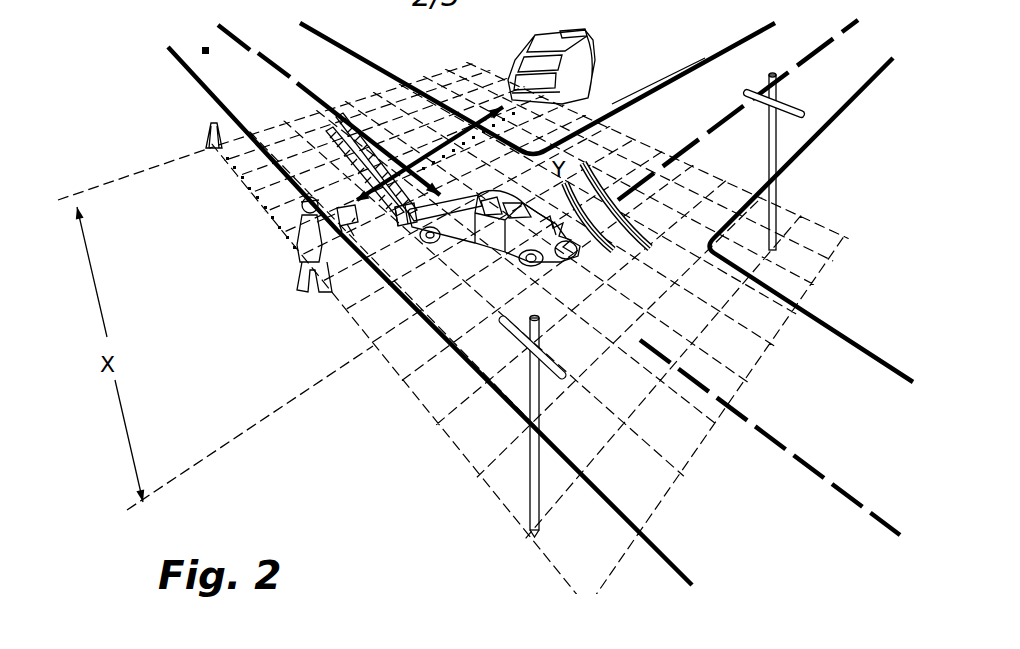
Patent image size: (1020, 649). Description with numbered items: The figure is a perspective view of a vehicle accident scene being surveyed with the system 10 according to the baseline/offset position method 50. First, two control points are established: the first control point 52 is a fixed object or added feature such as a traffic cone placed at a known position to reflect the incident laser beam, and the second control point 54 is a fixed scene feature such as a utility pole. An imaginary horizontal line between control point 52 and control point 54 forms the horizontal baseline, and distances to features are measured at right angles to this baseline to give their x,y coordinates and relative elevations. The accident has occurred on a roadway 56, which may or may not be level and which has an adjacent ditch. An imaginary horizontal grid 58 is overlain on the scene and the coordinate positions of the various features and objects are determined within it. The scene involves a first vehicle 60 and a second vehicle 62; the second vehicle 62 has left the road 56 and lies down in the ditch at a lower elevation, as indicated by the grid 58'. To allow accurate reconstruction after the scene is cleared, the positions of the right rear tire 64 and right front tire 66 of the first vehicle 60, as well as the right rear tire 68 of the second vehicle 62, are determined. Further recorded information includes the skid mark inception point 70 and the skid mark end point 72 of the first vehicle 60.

The system 10 is at (347, 228).
The baseline/offset position method 50 is at (295, 400).
The control point 52 is at (207, 148).
The control point 54 is at (532, 530).
The roadway 56 is at (711, 500).
The horizontal grid 58 is at (529, 345).
The grid 58' is at (537, 88).
The first vehicle 60 is at (501, 192).
The second vehicle 62 is at (587, 35).
The right rear tire 64 is at (429, 244).
The right front tire 66 is at (527, 267).
The right rear tire 68 is at (528, 50).
The skid mark inception point 70 is at (337, 130).
The skid mark end point 72 is at (398, 226).